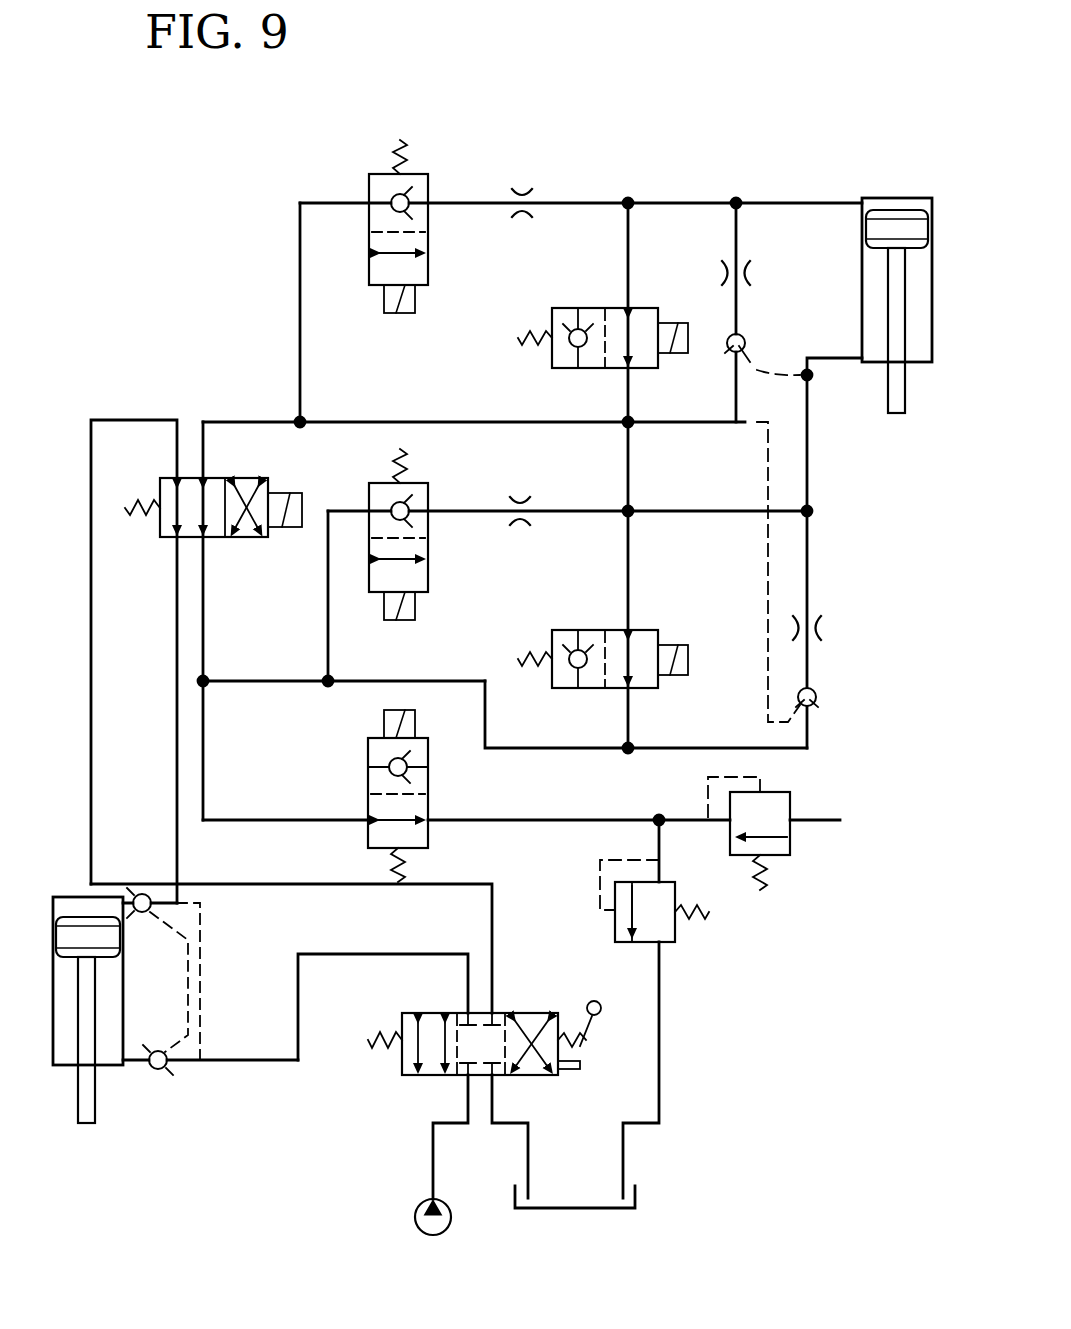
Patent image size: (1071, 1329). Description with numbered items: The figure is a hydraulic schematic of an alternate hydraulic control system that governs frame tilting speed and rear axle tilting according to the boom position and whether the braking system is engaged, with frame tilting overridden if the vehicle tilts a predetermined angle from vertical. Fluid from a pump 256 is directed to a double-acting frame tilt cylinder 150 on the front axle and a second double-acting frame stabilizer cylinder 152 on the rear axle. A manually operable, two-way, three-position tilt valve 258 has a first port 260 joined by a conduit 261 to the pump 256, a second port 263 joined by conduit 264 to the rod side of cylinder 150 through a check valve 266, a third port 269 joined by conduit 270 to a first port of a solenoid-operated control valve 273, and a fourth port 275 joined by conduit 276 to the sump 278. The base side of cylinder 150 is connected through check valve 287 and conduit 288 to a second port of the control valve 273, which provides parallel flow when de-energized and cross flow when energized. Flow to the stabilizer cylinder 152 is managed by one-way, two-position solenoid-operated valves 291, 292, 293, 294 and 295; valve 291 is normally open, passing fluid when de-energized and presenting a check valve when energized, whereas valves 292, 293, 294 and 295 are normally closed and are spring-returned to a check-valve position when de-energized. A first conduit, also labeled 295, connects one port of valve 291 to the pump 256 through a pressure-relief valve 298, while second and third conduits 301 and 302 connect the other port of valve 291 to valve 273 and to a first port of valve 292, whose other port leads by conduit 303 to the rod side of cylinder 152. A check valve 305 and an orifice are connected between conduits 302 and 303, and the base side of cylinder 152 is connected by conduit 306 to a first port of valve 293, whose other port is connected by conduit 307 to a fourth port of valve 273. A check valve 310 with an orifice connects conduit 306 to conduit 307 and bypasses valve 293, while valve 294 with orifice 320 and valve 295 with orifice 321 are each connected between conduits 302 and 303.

The frame tilt cylinder 150 is at (110, 934).
The frame stabilizer cylinder 152 is at (862, 256).
The pump 256 is at (414, 1218).
The tilt valve 258 is at (440, 1077).
The first port 260 is at (465, 1082).
The conduit 261 is at (432, 1172).
The second port 263 is at (465, 1010).
The conduit 264 is at (298, 976).
The check valve 266 is at (155, 1073).
The third port 269 is at (495, 1012).
The conduit 270 is at (336, 885).
The control valve 273 is at (243, 478).
The fourth port 275 is at (492, 1082).
The conduit 276 is at (530, 1150).
The sump 278 is at (640, 1204).
The check valve 287 is at (138, 894).
The conduit 288 is at (170, 700).
The solenoid-operated valve 291 is at (368, 783).
The solenoid-operated valve 292 is at (592, 630).
The solenoid-operated valve 293 is at (580, 308).
The solenoid-operated valve 294 is at (430, 551).
The solenoid-operated valve 295 is at (430, 240).
The pressure-relief valve 298 is at (662, 928).
The second conduit 301 is at (203, 612).
The third conduit 302 is at (235, 681).
The conduit 303 is at (843, 358).
The check valve 305 is at (818, 697).
The conduit 306 is at (670, 203).
The conduit 307 is at (536, 422).
The check valve 310 is at (745, 273).
The orifice 320 is at (520, 190).
The orifice 321 is at (565, 511).